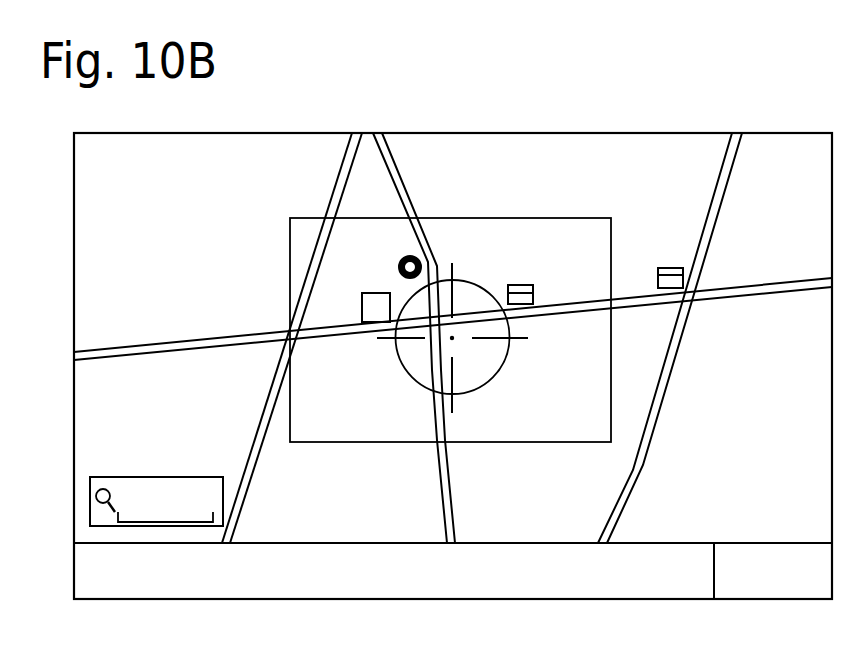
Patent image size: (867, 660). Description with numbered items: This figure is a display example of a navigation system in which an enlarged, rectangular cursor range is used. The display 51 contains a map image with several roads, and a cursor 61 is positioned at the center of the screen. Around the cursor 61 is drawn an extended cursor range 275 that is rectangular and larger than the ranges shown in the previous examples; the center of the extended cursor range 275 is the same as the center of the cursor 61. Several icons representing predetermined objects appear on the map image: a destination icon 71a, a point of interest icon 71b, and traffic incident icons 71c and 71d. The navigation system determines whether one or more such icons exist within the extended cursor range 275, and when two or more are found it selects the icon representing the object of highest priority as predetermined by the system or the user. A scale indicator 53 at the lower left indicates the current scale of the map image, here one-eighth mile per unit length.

The display 51 is at (605, 133).
The scale indicator 53 is at (96, 508).
The cursor 61 is at (483, 388).
The extended cursor range 275 is at (497, 435).
The destination icon 71a is at (401, 256).
The point of interest icon 71b is at (372, 292).
The traffic incident icon 71c is at (516, 285).
The traffic incident icon 71d is at (665, 268).